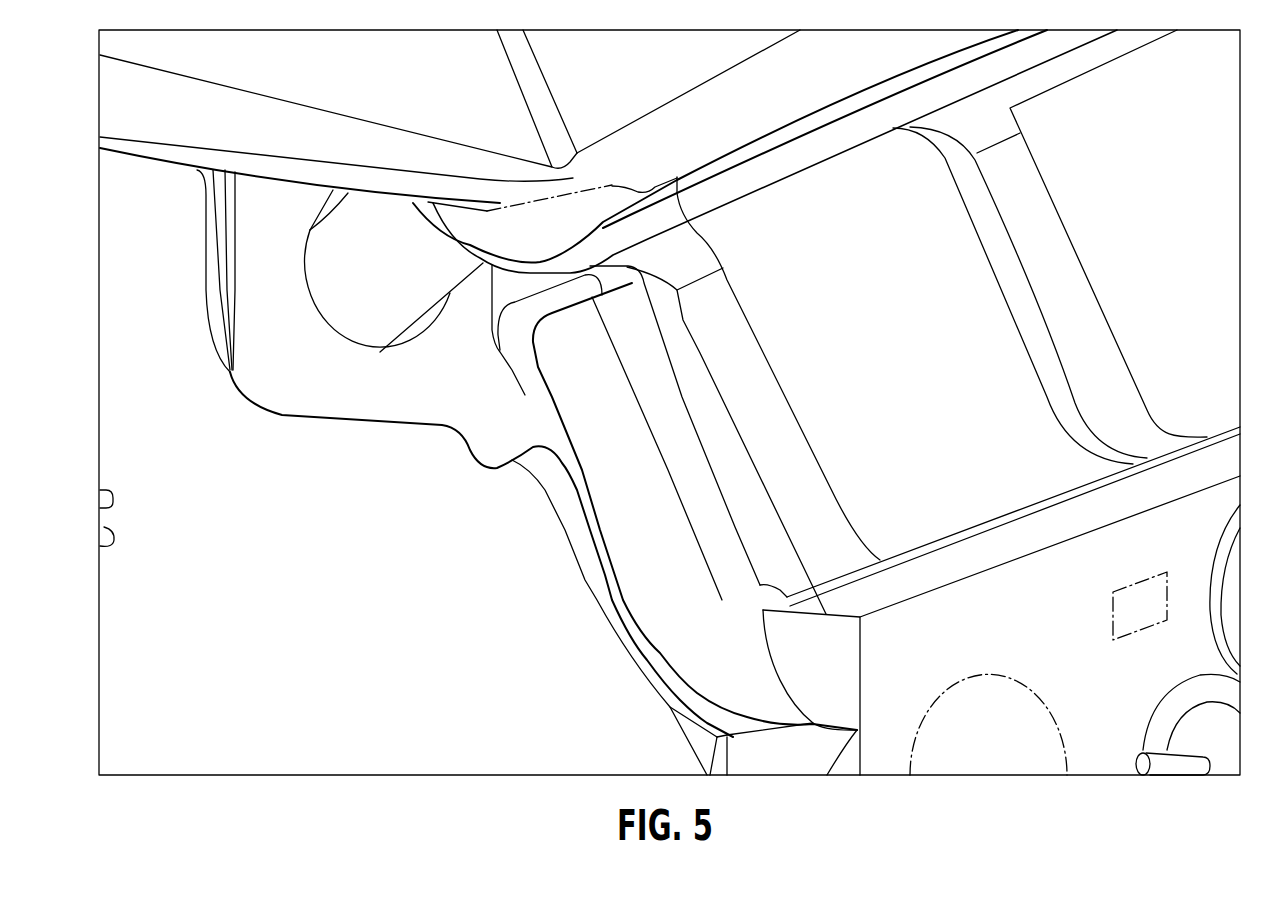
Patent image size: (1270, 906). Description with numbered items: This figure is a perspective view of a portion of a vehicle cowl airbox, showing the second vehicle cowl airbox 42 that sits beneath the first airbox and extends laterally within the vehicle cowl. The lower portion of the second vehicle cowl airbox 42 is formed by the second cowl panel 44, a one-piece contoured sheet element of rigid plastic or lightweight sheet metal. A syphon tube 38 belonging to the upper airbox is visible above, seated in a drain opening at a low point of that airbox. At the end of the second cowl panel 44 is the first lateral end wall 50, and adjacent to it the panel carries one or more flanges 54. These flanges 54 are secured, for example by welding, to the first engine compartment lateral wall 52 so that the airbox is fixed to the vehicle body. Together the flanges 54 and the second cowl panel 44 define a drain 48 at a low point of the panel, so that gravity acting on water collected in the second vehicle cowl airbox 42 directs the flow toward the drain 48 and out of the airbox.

The syphon tube 38 is at (385, 220).
The second vehicle cowl airbox 42 is at (1172, 53).
The second cowl panel 44 is at (1162, 202).
The drain 48 is at (747, 572).
The first lateral end wall 50 is at (738, 528).
The first engine compartment lateral wall 52 is at (443, 400).
The flanges 54 is at (630, 528).